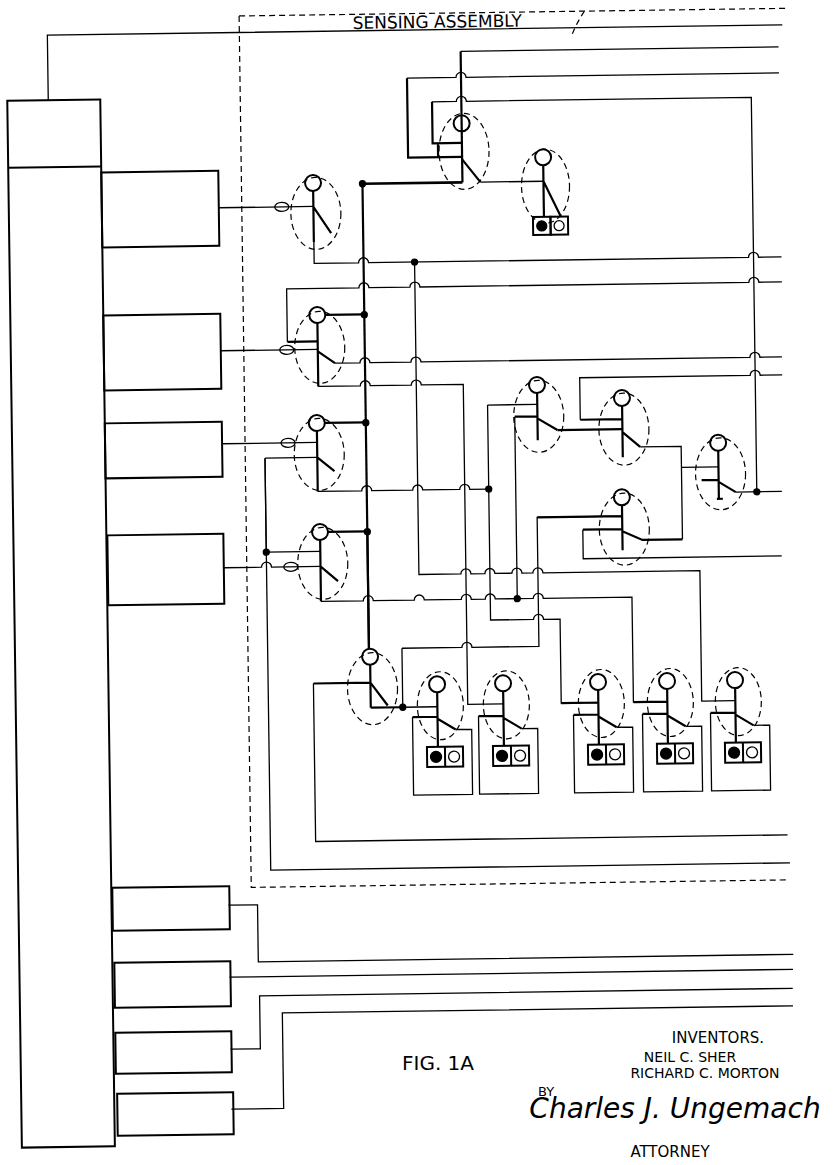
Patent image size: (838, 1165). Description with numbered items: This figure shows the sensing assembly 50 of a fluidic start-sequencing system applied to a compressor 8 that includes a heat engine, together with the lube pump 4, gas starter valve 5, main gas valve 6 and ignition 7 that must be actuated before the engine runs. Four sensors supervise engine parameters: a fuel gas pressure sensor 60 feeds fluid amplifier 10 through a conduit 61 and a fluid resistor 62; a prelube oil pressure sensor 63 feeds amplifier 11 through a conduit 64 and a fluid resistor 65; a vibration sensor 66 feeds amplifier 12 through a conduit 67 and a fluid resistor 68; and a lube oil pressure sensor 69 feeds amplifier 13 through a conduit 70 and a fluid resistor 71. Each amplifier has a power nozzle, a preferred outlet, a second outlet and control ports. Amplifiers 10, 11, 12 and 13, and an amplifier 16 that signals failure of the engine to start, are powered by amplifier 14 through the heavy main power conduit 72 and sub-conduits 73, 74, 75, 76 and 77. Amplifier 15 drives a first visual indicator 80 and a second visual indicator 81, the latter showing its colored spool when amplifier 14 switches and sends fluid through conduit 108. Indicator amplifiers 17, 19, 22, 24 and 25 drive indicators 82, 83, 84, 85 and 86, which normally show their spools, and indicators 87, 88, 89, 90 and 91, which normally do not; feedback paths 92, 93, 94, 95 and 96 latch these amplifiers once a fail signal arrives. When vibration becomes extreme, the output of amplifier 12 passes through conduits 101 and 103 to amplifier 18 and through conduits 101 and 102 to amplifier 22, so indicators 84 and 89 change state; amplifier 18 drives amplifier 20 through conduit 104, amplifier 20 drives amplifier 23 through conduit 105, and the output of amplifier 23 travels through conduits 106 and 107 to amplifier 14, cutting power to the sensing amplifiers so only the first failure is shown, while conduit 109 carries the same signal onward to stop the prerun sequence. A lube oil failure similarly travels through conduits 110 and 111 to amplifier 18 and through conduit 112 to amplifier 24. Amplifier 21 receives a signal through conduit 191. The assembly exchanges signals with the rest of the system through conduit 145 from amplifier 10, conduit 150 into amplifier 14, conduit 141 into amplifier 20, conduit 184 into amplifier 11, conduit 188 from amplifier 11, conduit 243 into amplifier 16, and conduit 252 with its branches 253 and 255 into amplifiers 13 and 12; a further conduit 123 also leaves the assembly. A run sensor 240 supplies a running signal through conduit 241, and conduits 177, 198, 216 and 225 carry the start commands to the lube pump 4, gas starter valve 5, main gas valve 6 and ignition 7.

The lube pump 4 is at (190, 883).
The gas starter valve 5 is at (191, 958).
The main gas valve 6 is at (192, 1029).
The ignition switch 7 is at (197, 1092).
The compressor 8 is at (108, 670).
The fluid amplifier 10 is at (312, 178).
The fluid amplifier 11 is at (316, 306).
The fluid amplifier 12 is at (319, 410).
The fluid amplifier 13 is at (318, 522).
The fluid amplifier 14 is at (480, 117).
The fluid amplifier 15 is at (547, 150).
The fluid amplifier 16 is at (359, 652).
The fluid amplifier 17 is at (438, 676).
The fluid amplifier 18 is at (539, 372).
The fluid amplifier 19 is at (504, 676).
The fluid amplifier 20 is at (633, 392).
The fluid amplifier 21 is at (626, 488).
The fluid amplifier 22 is at (602, 676).
The fluid amplifier 23 is at (721, 433).
The fluid amplifier 24 is at (672, 676).
The fluid amplifier 25 is at (740, 676).
The sensing assembly 50 is at (568, 31).
The fuel gas pressure sensor 60 is at (178, 168).
The conduit 61 is at (258, 198).
The fluid resistor 62 is at (280, 210).
The prelube oil pressure sensor 63 is at (180, 311).
The conduit 64 is at (252, 348).
The fluid resistor 65 is at (286, 355).
The vibration sensor 66 is at (182, 419).
The conduit 67 is at (254, 441).
The fluid resistor 68 is at (300, 453).
The lube oil pressure sensor 69 is at (182, 531).
The conduit 70 is at (236, 572).
The fluid resistor 71 is at (292, 572).
The main power conduit 72 is at (402, 184).
The sub-conduit 73 is at (338, 184).
The sub-conduit 74 is at (359, 320).
The sub-conduit 75 is at (360, 428).
The sub-conduit 76 is at (360, 529).
The sub-conduit 77 is at (372, 584).
The first visual indicator 80 is at (550, 238).
The second visual indicator 81 is at (570, 238).
The indicator 82 is at (437, 769).
The indicator 83 is at (504, 769).
The indicator 84 is at (599, 769).
The indicator 85 is at (667, 769).
The indicator 86 is at (735, 769).
The indicator 87 is at (453, 769).
The indicator 88 is at (521, 769).
The indicator 89 is at (615, 769).
The indicator 90 is at (683, 769).
The indicator 91 is at (752, 769).
The feedback path 92 is at (438, 797).
The feedback path 93 is at (515, 797).
The feedback path 94 is at (610, 797).
The feedback path 95 is at (680, 797).
The feedback path 96 is at (749, 797).
The conduit 101 is at (446, 490).
The conduit 102 is at (494, 507).
The conduit 103 is at (510, 406).
The conduit 104 is at (591, 438).
The conduit 105 is at (670, 451).
The conduit 106 is at (748, 504).
The conduit 107 is at (758, 416).
The conduit 108 is at (501, 186).
The conduit 109 is at (773, 493).
The conduit 110 is at (408, 600).
The conduit 111 is at (520, 490).
The conduit 112 is at (608, 600).
The output conductor 123 is at (718, 54).
The conduit 141 is at (719, 380).
The conduit 145 is at (721, 260).
The conduit 150 is at (721, 78).
The conduit 177 is at (743, 959).
The conduit 184 is at (721, 285).
The conduit 188 is at (721, 360).
The conduit 191 is at (682, 543).
The conduit 198 is at (743, 975).
The conduit 216 is at (745, 994).
The conduit 225 is at (747, 1012).
The run sensor 240 is at (72, 92).
The conduit 241 is at (716, 30).
The fluid conduit 243 is at (741, 840).
The conduit 252 is at (743, 866).
The conduit 253 is at (278, 549).
The conduit 255 is at (267, 482).